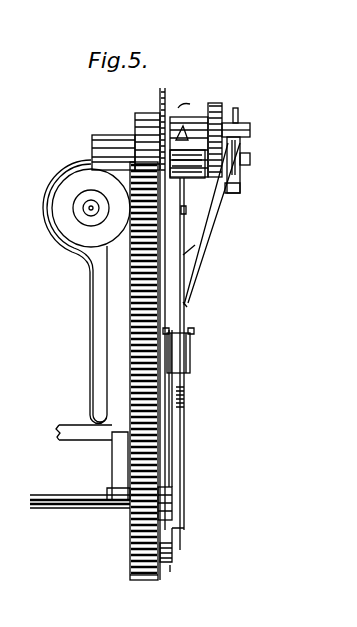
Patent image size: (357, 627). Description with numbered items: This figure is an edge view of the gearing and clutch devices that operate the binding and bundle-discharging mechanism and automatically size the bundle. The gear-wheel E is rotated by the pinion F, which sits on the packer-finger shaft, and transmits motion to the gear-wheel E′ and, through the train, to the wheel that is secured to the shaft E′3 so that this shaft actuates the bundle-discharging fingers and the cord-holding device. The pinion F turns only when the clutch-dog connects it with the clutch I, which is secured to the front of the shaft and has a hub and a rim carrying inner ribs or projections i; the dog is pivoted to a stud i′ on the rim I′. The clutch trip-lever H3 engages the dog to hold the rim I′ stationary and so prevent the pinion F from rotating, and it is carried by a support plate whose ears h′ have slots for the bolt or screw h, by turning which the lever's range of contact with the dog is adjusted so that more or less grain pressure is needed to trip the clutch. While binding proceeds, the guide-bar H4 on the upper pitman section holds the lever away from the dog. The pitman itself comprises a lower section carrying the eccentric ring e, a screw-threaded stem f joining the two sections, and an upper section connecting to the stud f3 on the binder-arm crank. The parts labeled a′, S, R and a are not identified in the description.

The gear-wheel E is at (162, 233).
The pinion F is at (126, 132).
The rim I′ is at (165, 326).
The clutch I is at (226, 114).
The stud i′ is at (184, 97).
The ribs or projections i is at (215, 133).
The bolt or screw h is at (240, 116).
The ears h′ is at (250, 130).
The clutch trip-lever H3 is at (241, 186).
The link a′ is at (195, 305).
The guide-bar H4 is at (194, 252).
The stud f3 is at (190, 211).
The gear-wheel E′ is at (160, 390).
The screw-threaded stem f is at (181, 369).
The pulley S is at (86, 292).
The lever R is at (92, 462).
The shaft E′3 is at (80, 513).
The bearing a is at (175, 488).
The eccentric ring e is at (175, 550).